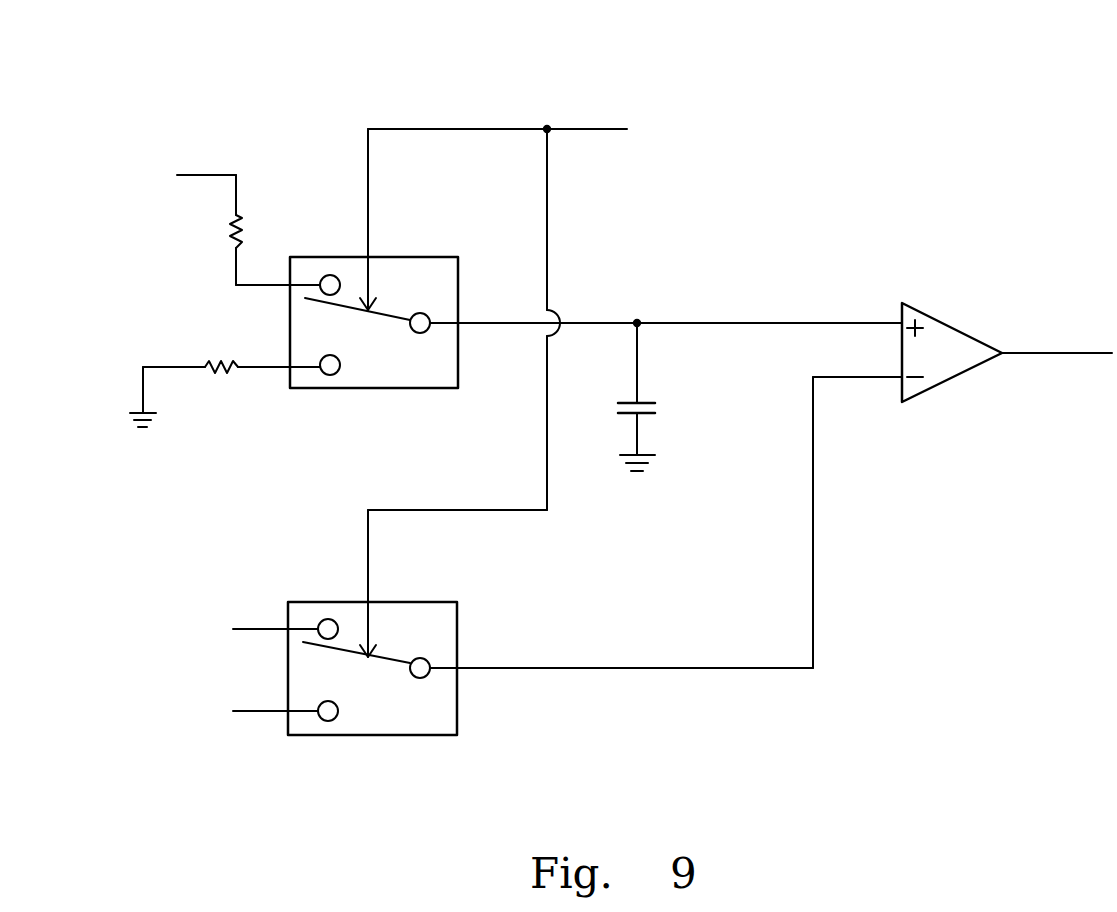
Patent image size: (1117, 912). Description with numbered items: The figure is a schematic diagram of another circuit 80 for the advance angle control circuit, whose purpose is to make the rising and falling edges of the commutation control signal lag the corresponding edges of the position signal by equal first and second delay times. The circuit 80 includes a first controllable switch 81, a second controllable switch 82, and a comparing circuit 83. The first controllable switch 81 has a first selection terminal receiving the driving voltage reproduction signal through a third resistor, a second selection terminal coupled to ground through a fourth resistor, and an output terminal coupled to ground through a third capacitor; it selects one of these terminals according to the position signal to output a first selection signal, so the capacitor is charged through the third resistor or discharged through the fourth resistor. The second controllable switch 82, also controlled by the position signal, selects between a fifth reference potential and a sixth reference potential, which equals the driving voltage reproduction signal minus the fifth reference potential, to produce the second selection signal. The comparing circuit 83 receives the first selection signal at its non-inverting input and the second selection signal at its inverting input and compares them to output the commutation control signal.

The circuit 80 is at (620, 23).
The first controllable switch 81 is at (388, 257).
The second controllable switch 82 is at (417, 735).
The comparing circuit 83 is at (935, 317).